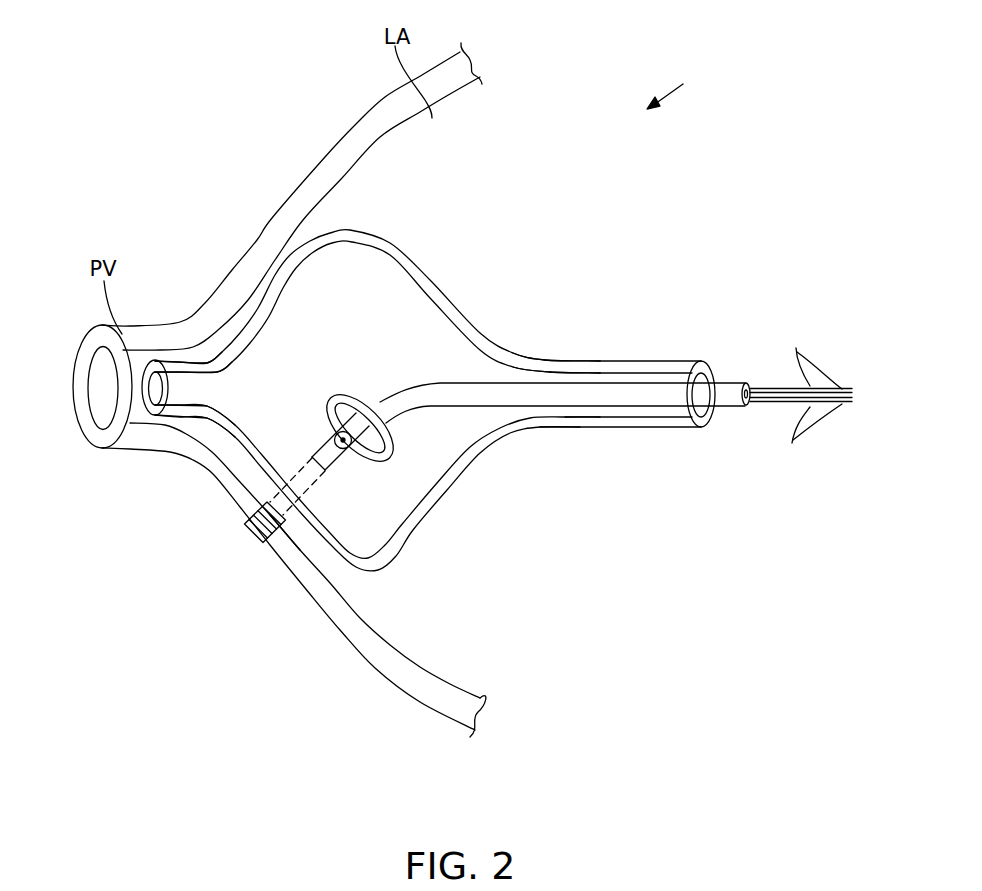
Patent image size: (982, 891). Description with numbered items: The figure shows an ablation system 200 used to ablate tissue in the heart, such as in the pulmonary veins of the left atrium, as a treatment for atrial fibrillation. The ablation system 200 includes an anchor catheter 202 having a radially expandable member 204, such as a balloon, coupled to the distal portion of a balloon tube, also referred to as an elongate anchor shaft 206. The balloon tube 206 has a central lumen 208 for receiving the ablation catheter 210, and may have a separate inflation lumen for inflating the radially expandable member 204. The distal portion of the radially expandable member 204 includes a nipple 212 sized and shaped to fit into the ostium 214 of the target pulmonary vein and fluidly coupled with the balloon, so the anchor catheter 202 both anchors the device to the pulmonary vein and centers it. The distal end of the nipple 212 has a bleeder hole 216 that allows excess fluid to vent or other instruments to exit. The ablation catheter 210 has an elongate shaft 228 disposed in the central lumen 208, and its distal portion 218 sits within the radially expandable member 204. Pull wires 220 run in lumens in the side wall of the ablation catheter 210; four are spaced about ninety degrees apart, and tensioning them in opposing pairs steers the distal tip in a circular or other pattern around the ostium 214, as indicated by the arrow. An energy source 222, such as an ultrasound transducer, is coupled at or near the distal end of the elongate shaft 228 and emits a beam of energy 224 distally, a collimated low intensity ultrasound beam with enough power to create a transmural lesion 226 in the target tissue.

The ablation system 200 is at (685, 90).
The anchor catheter 202 is at (653, 362).
The radially expandable member 204 is at (410, 258).
The elongate anchor shaft 206 is at (618, 428).
The central lumen 208 is at (595, 373).
The ablation catheter 210 is at (507, 415).
The nipple 212 is at (172, 424).
The ostium 214 is at (200, 350).
The bleeder hole 216 is at (153, 388).
The distal portion of the ablation catheter 218 is at (330, 463).
The pull wires 220 is at (796, 349).
The energy source 222 is at (301, 548).
The beam of energy 224 is at (287, 477).
The transmural lesion 226 is at (263, 543).
The elongate shaft 228 is at (547, 377).